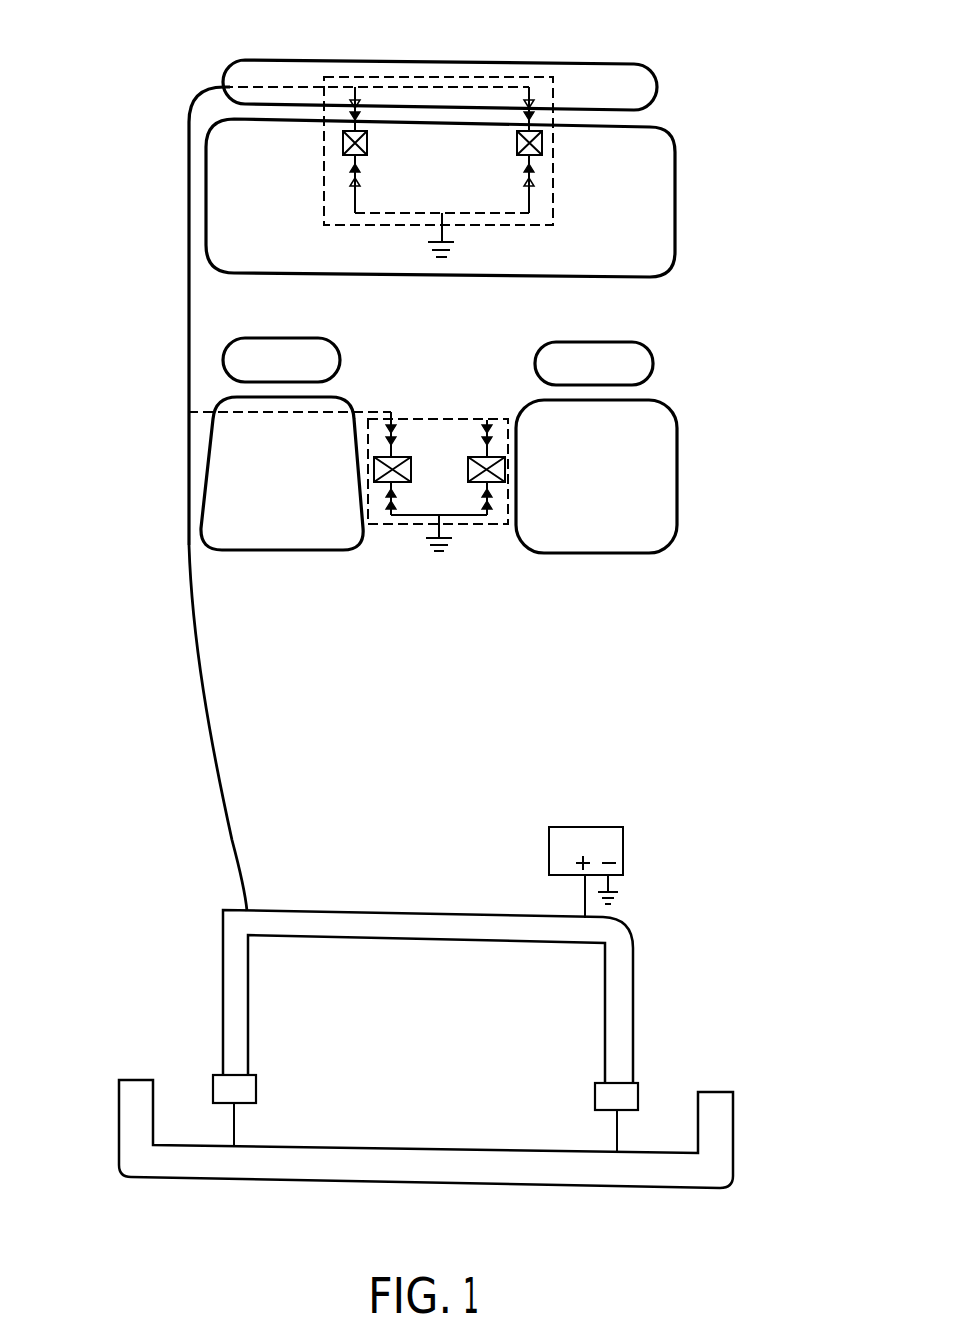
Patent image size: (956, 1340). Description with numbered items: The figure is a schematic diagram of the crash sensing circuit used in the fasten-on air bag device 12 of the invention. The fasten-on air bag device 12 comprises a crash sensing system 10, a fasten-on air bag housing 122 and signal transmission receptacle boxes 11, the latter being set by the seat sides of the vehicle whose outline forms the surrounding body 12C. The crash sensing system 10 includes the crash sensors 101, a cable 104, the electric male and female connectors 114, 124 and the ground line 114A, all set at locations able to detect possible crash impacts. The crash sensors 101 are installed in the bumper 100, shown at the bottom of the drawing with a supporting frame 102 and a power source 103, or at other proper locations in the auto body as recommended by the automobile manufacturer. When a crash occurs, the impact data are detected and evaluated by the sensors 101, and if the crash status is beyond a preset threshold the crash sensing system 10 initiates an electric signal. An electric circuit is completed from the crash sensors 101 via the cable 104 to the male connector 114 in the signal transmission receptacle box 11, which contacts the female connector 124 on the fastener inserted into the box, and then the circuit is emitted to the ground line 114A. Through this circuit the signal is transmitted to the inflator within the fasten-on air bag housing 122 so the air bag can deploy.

The crash sensing system 10 is at (173, 722).
The signal transmission receptacle box 11 is at (460, 78).
The fasten-on air bag device 12 is at (657, 73).
The vehicle body 12C is at (171, 316).
The bumper 100 is at (128, 1107).
The crash sensors 101 is at (245, 1088).
The frame 102 is at (223, 978).
The power supply battery 103 is at (557, 843).
The cable 104 is at (187, 549).
The electric male connector 114 is at (530, 101).
The ground line 114A is at (529, 200).
The fasten-on air bag housing 122 is at (542, 152).
The electric female connector 124 is at (542, 130).